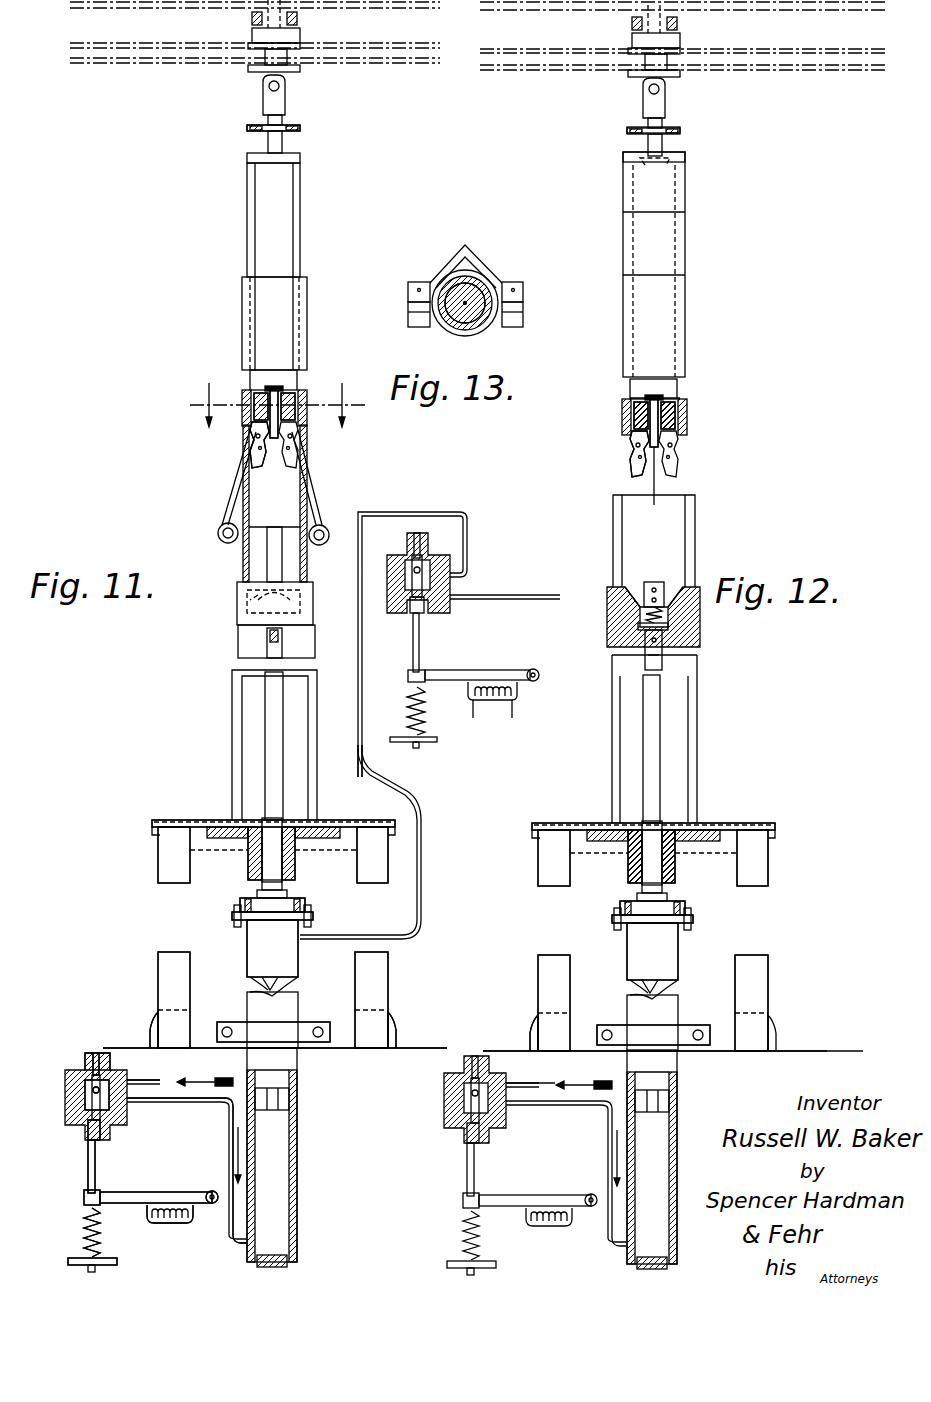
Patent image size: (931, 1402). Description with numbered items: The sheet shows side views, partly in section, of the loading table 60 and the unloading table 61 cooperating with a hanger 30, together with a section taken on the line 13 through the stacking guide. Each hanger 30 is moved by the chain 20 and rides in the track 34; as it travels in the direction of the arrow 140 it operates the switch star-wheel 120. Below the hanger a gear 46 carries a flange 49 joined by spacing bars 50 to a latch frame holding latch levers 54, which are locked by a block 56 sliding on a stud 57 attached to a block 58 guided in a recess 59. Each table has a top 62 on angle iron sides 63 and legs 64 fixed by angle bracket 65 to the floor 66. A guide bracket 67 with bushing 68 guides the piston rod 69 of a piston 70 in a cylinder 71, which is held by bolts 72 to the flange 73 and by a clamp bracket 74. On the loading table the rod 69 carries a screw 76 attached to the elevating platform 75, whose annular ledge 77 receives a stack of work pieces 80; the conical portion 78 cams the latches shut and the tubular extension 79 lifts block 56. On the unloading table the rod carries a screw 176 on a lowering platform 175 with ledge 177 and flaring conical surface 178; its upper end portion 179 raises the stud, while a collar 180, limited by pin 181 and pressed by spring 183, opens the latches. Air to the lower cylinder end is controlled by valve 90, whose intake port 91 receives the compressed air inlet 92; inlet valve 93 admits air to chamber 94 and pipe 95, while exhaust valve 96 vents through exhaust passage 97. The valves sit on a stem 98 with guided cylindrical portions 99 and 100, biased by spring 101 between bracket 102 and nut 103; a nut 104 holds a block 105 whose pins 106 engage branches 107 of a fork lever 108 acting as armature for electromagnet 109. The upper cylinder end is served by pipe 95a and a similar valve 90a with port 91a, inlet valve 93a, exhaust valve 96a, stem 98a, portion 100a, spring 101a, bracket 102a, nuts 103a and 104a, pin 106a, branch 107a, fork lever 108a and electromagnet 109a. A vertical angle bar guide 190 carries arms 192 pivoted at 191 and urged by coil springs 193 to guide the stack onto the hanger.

In FIG. 11, the section line 13— 13 is at (277, 396).
In FIG. 11, the chain 20 is at (110, 60).
In FIG. 11, the hanger 30 is at (203, 138).
In FIG. 12, the hanger 30 is at (610, 120).
In FIG. 11, the track 34 is at (121, 2).
In FIG. 11, the gear 46 is at (288, 128).
In FIG. 12, the gear 46 is at (668, 130).
In FIG. 11, the flange 49 is at (289, 158).
In FIG. 12, the flange 49 is at (668, 165).
In FIG. 11, the spacing bars 50 is at (300, 376).
In FIG. 12, the spacing bars 50 is at (686, 390).
In FIG. 11, the latch lever 54 is at (250, 432).
In FIG. 12, the latch lever 54 is at (680, 445).
In FIG. 11, the locking block 56 is at (303, 400).
In FIG. 12, the locking block 56 is at (690, 418).
In FIG. 11, the stud 57 is at (276, 468).
In FIG. 12, the stud 57 is at (655, 490).
In FIG. 11, the locking block 58 is at (296, 396).
In FIG. 12, the locking block 58 is at (684, 408).
In FIG. 12, the recess 59 is at (642, 400).
In FIG. 11, the loading table 60 is at (128, 840).
In FIG. 12, the unloading table 61 is at (508, 843).
In FIG. 11, the table top 62 is at (170, 820).
In FIG. 12, the table top 62 is at (565, 823).
In FIG. 11, the angle iron sides 63 is at (155, 852).
In FIG. 12, the angle iron sides 63 is at (538, 850).
In FIG. 11, the angle iron legs 64 is at (158, 958).
In FIG. 12, the angle iron legs 64 is at (538, 958).
In FIG. 11, the angle bracket 65 is at (152, 1015).
In FIG. 12, the angle bracket 65 is at (532, 1035).
In FIG. 11, the floor 66 is at (110, 1048).
In FIG. 12, the floor 66 is at (775, 1040).
In FIG. 11, the guide bracket 67 is at (248, 848).
In FIG. 12, the guide bracket 67 is at (628, 870).
In FIG. 11, the guide bushing 68 is at (296, 855).
In FIG. 12, the guide bushing 68 is at (676, 860).
In FIG. 11, the piston rod 69 is at (274, 705).
In FIG. 12, the piston rod 69 is at (655, 735).
In FIG. 11, the piston 70 is at (270, 1118).
In FIG. 12, the piston 70 is at (655, 1120).
In FIG. 11, the cylinder 71 is at (247, 960).
In FIG. 12, the cylinder 71 is at (627, 958).
In FIG. 11, the bolts 72 is at (240, 928).
In FIG. 12, the bolts 72 is at (620, 930).
In FIG. 11, the flange 73 is at (240, 912).
In FIG. 12, the flange 73 is at (694, 915).
In FIG. 11, the clamp bracket 74 is at (300, 1028).
In FIG. 12, the clamp bracket 74 is at (605, 1028).
In FIG. 11, the elevating platform 75 is at (237, 603).
In FIG. 11, the screw 76 is at (280, 635).
In FIG. 11, the annular ledge 77 is at (313, 592).
In FIG. 11, the conical portion 78 is at (250, 600).
In FIG. 11, the tubular extension 79 is at (273, 560).
In FIG. 11, the work pieces 80 is at (308, 300).
In FIG. 12, the work pieces 80 is at (690, 232).
In FIG. 11, the valve 90 is at (65, 1082).
In FIG. 12, the valve 90 is at (444, 1092).
In FIG. 11, the intake port 91 is at (85, 1060).
In FIG. 12, the intake port 91 is at (464, 1063).
In FIG. 11, the compressed air inlet 92 is at (152, 1080).
In FIG. 12, the compressed air inlet 92 is at (540, 1083).
In FIG. 11, the inlet valve 93 is at (85, 1095).
In FIG. 12, the inlet valve 93 is at (464, 1100).
In FIG. 11, the chamber 94 is at (110, 1105).
In FIG. 12, the chamber 94 is at (500, 1115).
In FIG. 11, the pipe 95 is at (183, 1100).
In FIG. 12, the pipe 95 is at (540, 1103).
In FIG. 11, the exhaust valve 96 is at (88, 1132).
In FIG. 12, the exhaust valve 96 is at (468, 1138).
In FIG. 11, the exhaust passage 97 is at (113, 1125).
In FIG. 12, the exhaust passage 97 is at (498, 1128).
In FIG. 11, the valve stem 98 is at (88, 1172).
In FIG. 12, the valve stem 98 is at (467, 1175).
In FIG. 11, the cylindrical portion 99 is at (90, 1140).
In FIG. 12, the cylindrical portion 99 is at (475, 1140).
In FIG. 11, the cylindrical portion 100 is at (94, 1060).
In FIG. 12, the cylindrical portion 100 is at (470, 1065).
In FIG. 11, the spring 101 is at (84, 1228).
In FIG. 12, the spring 101 is at (463, 1228).
In FIG. 11, the bracket 102 is at (100, 1260).
In FIG. 12, the bracket 102 is at (485, 1262).
In FIG. 11, the nut 103 is at (86, 1204).
In FIG. 12, the nut 103 is at (463, 1206).
In FIG. 11, the nut 104 is at (84, 1199).
In FIG. 12, the nut 104 is at (463, 1200).
In FIG. 11, the block 105 is at (84, 1194).
In FIG. 12, the block 105 is at (463, 1196).
In FIG. 11, the pins 106 is at (95, 1193).
In FIG. 12, the pins 106 is at (478, 1196).
In FIG. 11, the branch 107 is at (105, 1200).
In FIG. 12, the branch 107 is at (488, 1203).
In FIG. 11, the fork lever 108 is at (160, 1192).
In FIG. 12, the fork lever 108 is at (540, 1195).
In FIG. 11, the electromagnet 109 is at (170, 1225).
In FIG. 12, the electromagnet 109 is at (548, 1228).
In FIG. 11, the switch star-wheel 120 is at (252, 18).
In FIG. 12, the switch star-wheel 120 is at (630, 22).
In FIG. 11, the arrow 140 is at (160, 200).
In FIG. 12, the lowering platform 175 is at (607, 645).
In FIG. 12, the screw 176 is at (665, 657).
In FIG. 12, the ledge 177 is at (607, 617).
In FIG. 12, the flaring conical surface 178 is at (607, 595).
In FIG. 12, the upper end portion 179 is at (654, 582).
In FIG. 12, the collar 180 is at (640, 590).
In FIG. 12, the pin 181 is at (664, 590).
In FIG. 12, the spring 183 is at (668, 612).
In FIG. 11, the angle bar guide 190 is at (238, 646).
In FIG. 13, the angle bar guide 190 is at (455, 255).
In FIG. 11, the pivot 191 is at (218, 531).
In FIG. 13, the pivot 191 is at (412, 282).
In FIG. 11, the arms 192 is at (240, 455).
In FIG. 13, the arms 192 is at (408, 300).
In FIG. 13, the coil springs 193 is at (408, 316).
In FIG. 11, the valve 90a is at (387, 565).
In FIG. 11, the intake port 91a is at (407, 562).
In FIG. 11, the inlet valve 93a is at (405, 580).
In FIG. 11, the pipe 95a is at (467, 528).
In FIG. 11, the exhaust valve 96a is at (412, 610).
In FIG. 11, the valve stem 98a is at (413, 642).
In FIG. 11, the cylindrical portion 100a is at (418, 540).
In FIG. 11, the spring 101a is at (407, 700).
In FIG. 11, the bracket 102a is at (392, 740).
In FIG. 11, the nut 103a is at (408, 684).
In FIG. 11, the nut 104a is at (408, 680).
In FIG. 11, the pin 106a is at (420, 672).
In FIG. 11, the branch 107a is at (426, 684).
In FIG. 11, the fork lever 108a is at (450, 670).
In FIG. 11, the electromagnet 109a is at (492, 712).